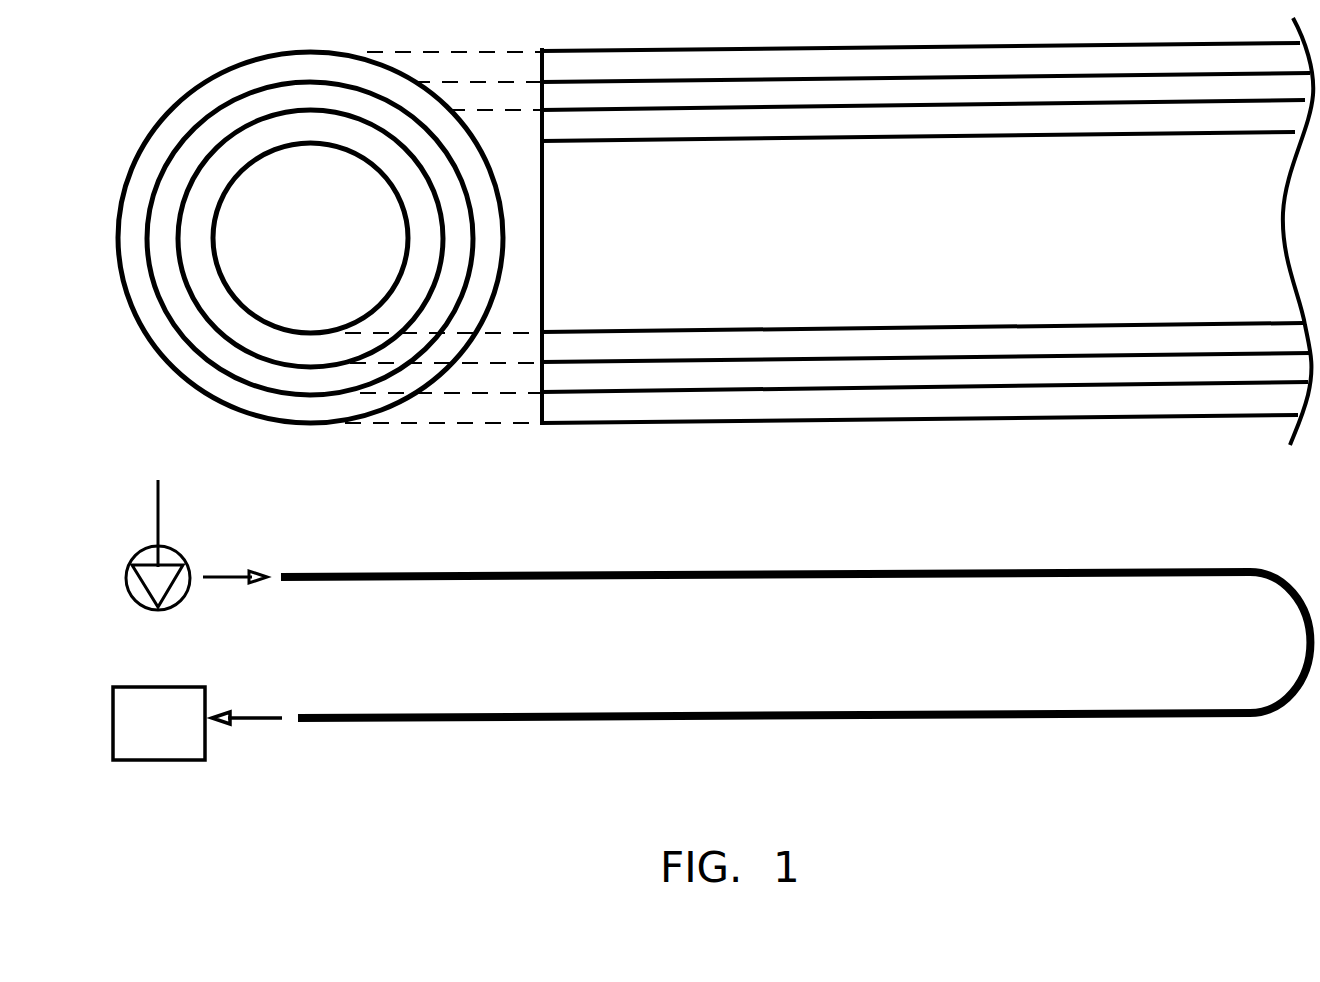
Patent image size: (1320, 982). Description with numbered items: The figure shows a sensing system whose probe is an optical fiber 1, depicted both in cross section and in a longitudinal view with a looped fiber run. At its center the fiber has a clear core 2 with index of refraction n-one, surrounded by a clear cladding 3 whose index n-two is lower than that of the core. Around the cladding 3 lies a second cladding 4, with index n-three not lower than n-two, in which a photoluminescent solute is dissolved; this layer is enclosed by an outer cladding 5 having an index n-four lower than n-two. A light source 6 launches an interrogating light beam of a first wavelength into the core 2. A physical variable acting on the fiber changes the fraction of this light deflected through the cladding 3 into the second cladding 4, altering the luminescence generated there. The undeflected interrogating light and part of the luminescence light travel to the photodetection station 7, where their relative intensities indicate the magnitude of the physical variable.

The optical fiber 1 is at (847, 433).
The core 2 is at (310, 238).
The cladding 3 is at (310, 238).
The second cladding 4 is at (190, 152).
The outer cladding 5 is at (227, 90).
The light source 6 is at (134, 558).
The photodetection station 7 is at (129, 680).